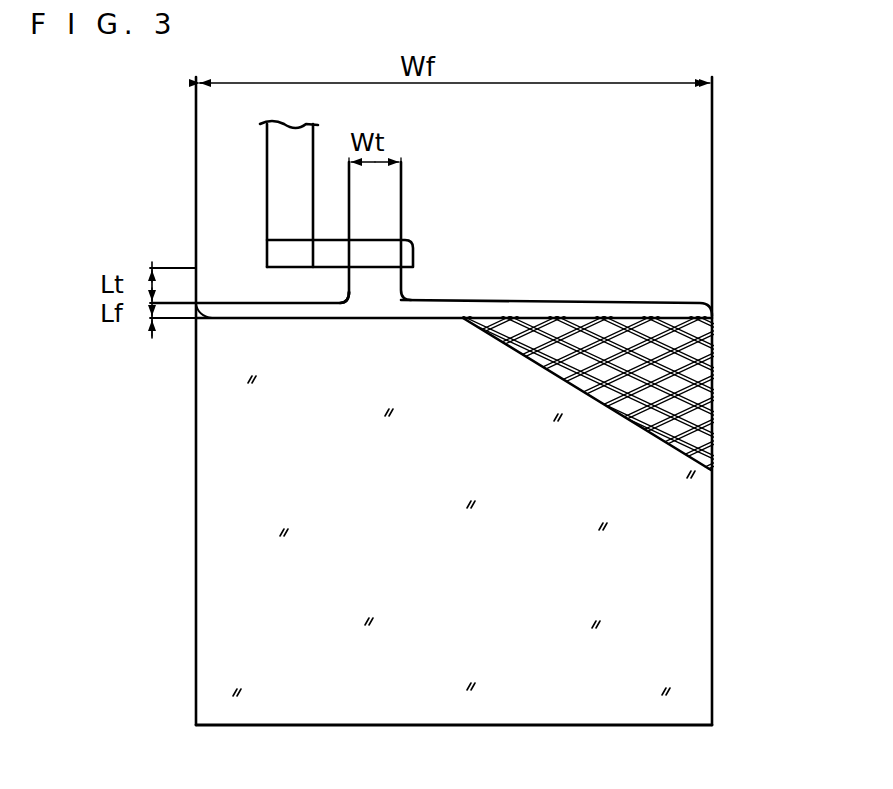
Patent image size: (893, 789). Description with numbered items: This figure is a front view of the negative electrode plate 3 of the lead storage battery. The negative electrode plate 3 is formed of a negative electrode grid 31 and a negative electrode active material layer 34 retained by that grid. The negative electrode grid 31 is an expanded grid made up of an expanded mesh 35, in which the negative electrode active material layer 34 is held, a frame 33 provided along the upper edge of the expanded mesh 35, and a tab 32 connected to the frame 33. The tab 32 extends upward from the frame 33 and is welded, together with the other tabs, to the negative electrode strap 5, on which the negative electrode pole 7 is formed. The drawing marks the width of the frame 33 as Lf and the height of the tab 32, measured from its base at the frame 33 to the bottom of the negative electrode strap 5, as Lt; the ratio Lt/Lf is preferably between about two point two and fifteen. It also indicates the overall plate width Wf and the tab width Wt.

The negative electrode plate 3 is at (722, 549).
The negative electrode strap 5 is at (412, 253).
The negative electrode pole 7 is at (278, 194).
The negative electrode grid 31 is at (675, 312).
The tab 32 is at (384, 292).
The frame 33 is at (557, 312).
The negative electrode active material layer 34 is at (402, 706).
The expanded mesh 35 is at (640, 318).